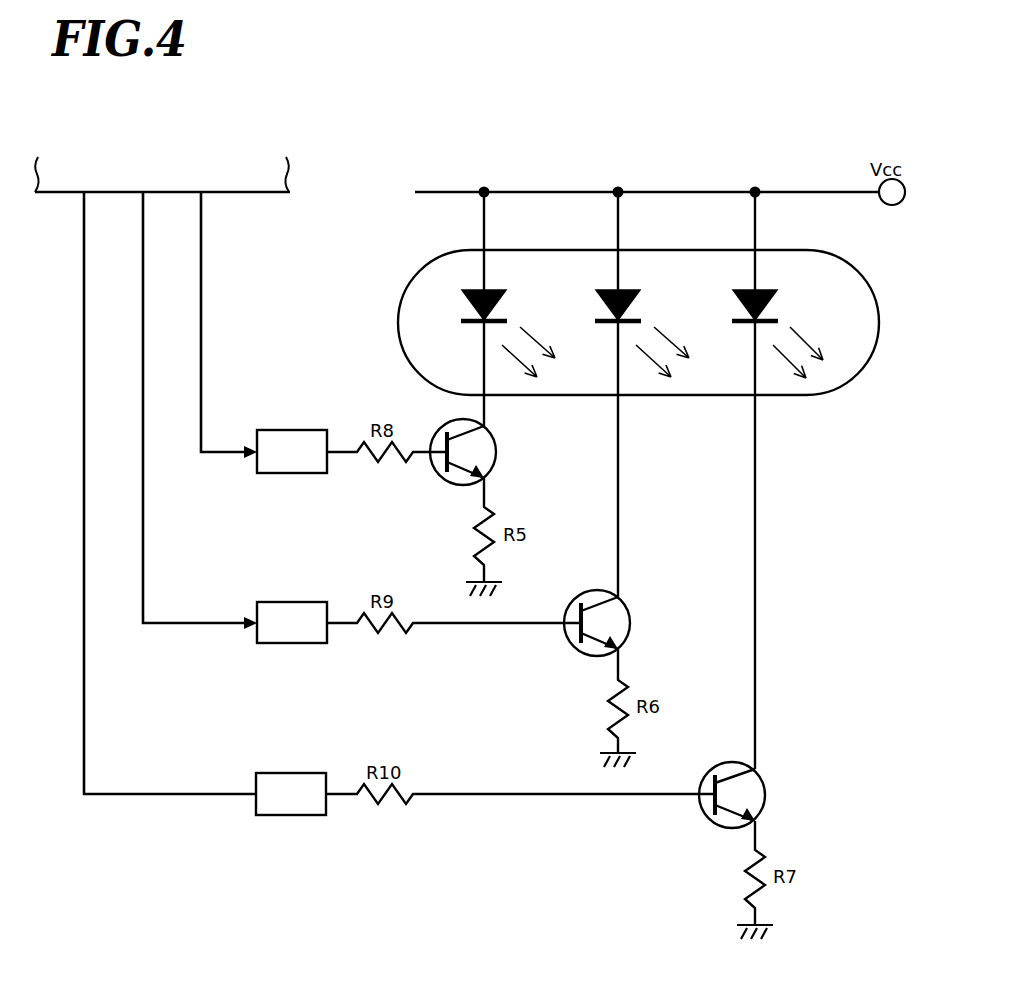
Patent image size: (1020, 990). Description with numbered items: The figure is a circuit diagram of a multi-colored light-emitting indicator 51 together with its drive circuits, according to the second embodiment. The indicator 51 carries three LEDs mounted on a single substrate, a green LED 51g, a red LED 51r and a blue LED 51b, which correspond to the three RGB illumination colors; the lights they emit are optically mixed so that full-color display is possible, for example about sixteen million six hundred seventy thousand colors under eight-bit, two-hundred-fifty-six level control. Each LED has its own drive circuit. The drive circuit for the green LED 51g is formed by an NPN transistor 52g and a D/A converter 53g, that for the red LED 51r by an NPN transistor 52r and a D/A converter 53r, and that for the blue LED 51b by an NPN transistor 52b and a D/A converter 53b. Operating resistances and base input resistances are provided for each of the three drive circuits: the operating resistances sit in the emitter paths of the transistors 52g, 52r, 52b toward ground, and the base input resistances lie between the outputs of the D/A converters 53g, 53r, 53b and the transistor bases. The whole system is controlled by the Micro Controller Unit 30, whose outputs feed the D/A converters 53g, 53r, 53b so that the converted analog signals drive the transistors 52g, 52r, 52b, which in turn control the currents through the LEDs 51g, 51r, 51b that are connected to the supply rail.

The Micro Controller Unit (MCU) 30 is at (247, 193).
The multi-colored light-emitting indicator 51 is at (398, 314).
The green LED 51g is at (472, 280).
The red LED 51r is at (606, 280).
The blue LED 51b is at (742, 280).
The NPN transistor for green LED 52g is at (498, 452).
The NPN transistor for red LED 52r is at (632, 623).
The NPN transistor for blue LED 52b is at (768, 795).
The D/A converter for green LED 53g is at (291, 430).
The D/A converter for red LED 53r is at (291, 602).
The D/A converter for blue LED 53b is at (291, 773).